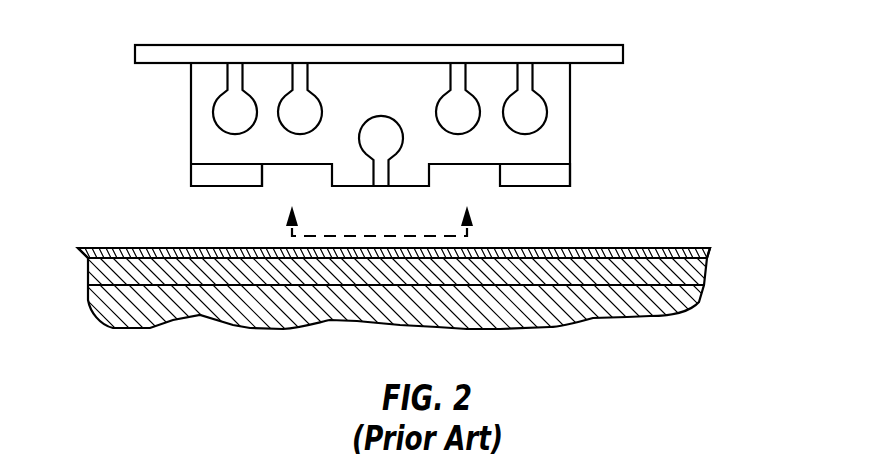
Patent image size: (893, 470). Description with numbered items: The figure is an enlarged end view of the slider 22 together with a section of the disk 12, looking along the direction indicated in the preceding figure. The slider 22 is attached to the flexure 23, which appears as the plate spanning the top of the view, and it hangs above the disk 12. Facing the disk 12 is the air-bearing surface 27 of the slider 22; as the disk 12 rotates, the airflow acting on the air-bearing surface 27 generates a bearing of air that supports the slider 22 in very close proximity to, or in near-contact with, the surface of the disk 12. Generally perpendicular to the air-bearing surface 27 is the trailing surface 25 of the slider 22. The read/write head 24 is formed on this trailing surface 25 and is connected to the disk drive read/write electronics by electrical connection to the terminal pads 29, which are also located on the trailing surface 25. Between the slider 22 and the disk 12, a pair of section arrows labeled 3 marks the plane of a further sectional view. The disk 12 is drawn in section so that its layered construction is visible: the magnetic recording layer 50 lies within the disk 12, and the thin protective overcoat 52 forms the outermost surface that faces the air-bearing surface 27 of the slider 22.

The disk 12 is at (694, 303).
The slider 22 is at (572, 148).
The flexure 23 is at (606, 49).
The read/write head 24 is at (376, 120).
The trailing surface 25 is at (207, 149).
The air-bearing surface 27 is at (225, 188).
The terminal pads 29 is at (280, 110).
The magnetic recording layer 50 is at (88, 273).
The protective overcoat 52 is at (100, 247).
The section line for FIG. 3 is at (380, 204).